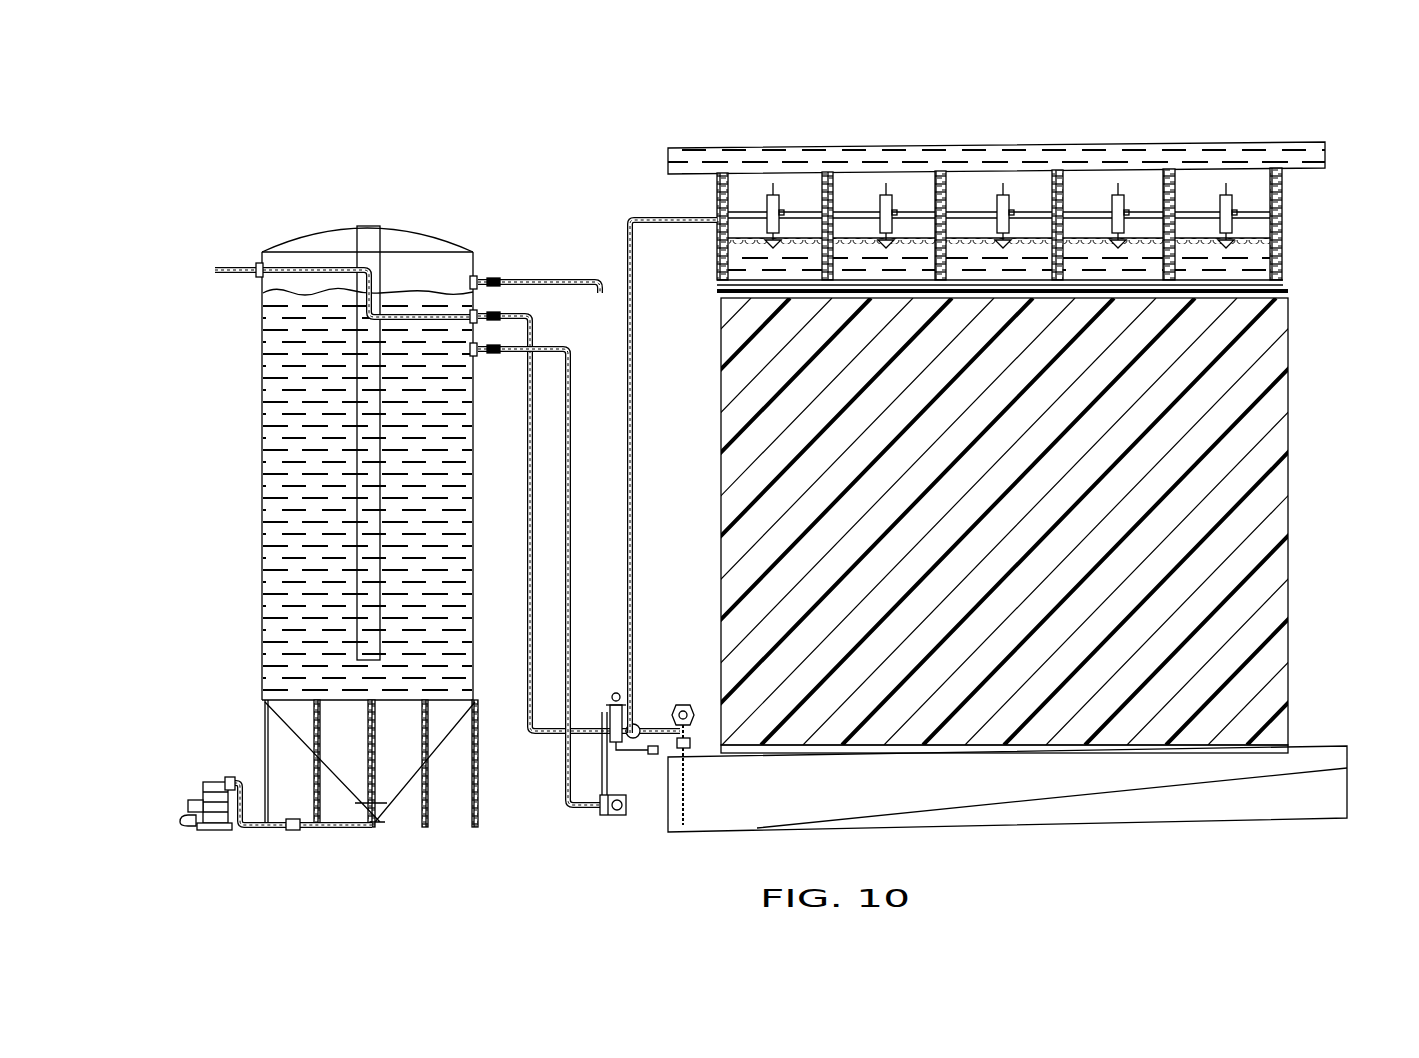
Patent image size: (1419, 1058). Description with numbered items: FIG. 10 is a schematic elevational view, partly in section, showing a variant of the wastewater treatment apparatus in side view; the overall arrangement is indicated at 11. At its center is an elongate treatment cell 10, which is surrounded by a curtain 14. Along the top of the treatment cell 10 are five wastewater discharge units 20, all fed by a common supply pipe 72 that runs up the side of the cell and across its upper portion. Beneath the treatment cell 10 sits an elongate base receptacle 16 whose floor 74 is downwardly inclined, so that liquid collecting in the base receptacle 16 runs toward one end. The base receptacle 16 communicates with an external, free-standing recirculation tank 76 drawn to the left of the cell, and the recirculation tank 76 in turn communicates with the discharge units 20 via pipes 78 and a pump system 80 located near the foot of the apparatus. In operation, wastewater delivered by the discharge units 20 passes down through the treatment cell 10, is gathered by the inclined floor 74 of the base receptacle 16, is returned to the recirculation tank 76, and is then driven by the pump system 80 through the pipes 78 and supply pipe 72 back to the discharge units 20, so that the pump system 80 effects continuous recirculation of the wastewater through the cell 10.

The treatment cell 10 is at (680, 343).
The bioremediation system 11 is at (868, 482).
The curtain 14 is at (738, 472).
The base receptacle 16 is at (1307, 757).
The wastewater discharge units 20 is at (783, 210).
The supply pipe 72 is at (655, 218).
The inclined floor 74 is at (933, 813).
The recirculation tank 76 is at (237, 460).
The pipes 78 is at (567, 418).
The pump system 80 is at (578, 824).